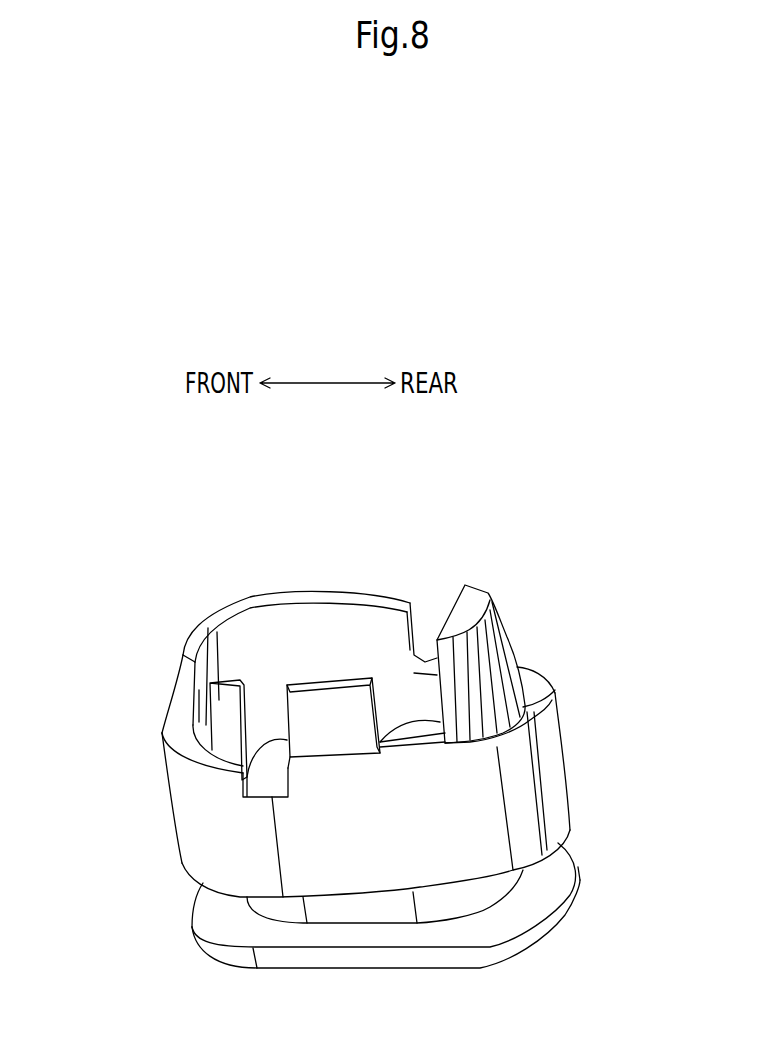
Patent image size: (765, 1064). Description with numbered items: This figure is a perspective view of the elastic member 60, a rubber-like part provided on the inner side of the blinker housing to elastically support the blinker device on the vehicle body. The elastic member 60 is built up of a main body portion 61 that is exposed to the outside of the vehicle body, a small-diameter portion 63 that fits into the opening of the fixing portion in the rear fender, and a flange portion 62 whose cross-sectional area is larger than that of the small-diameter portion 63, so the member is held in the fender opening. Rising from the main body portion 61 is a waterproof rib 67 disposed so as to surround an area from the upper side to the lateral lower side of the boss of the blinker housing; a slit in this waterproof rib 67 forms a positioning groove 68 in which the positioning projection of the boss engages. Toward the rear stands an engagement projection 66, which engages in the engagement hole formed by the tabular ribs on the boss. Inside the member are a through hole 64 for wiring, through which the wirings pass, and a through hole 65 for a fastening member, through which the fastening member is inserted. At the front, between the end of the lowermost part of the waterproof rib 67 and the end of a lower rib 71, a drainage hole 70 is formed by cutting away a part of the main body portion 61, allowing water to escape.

The elastic member 60 is at (165, 568).
The main body portion 61 is at (548, 746).
The flange portion 62 is at (475, 958).
The small-diameter portion 63 is at (517, 924).
The through hole for wiring 64 is at (414, 715).
The through hole for a fastening member 65 is at (280, 732).
The engagement projection 66 is at (472, 600).
The waterproof rib 67 is at (275, 628).
The positioning groove 68 is at (185, 725).
The drainage hole 70 is at (252, 788).
The lower rib 71 is at (343, 717).